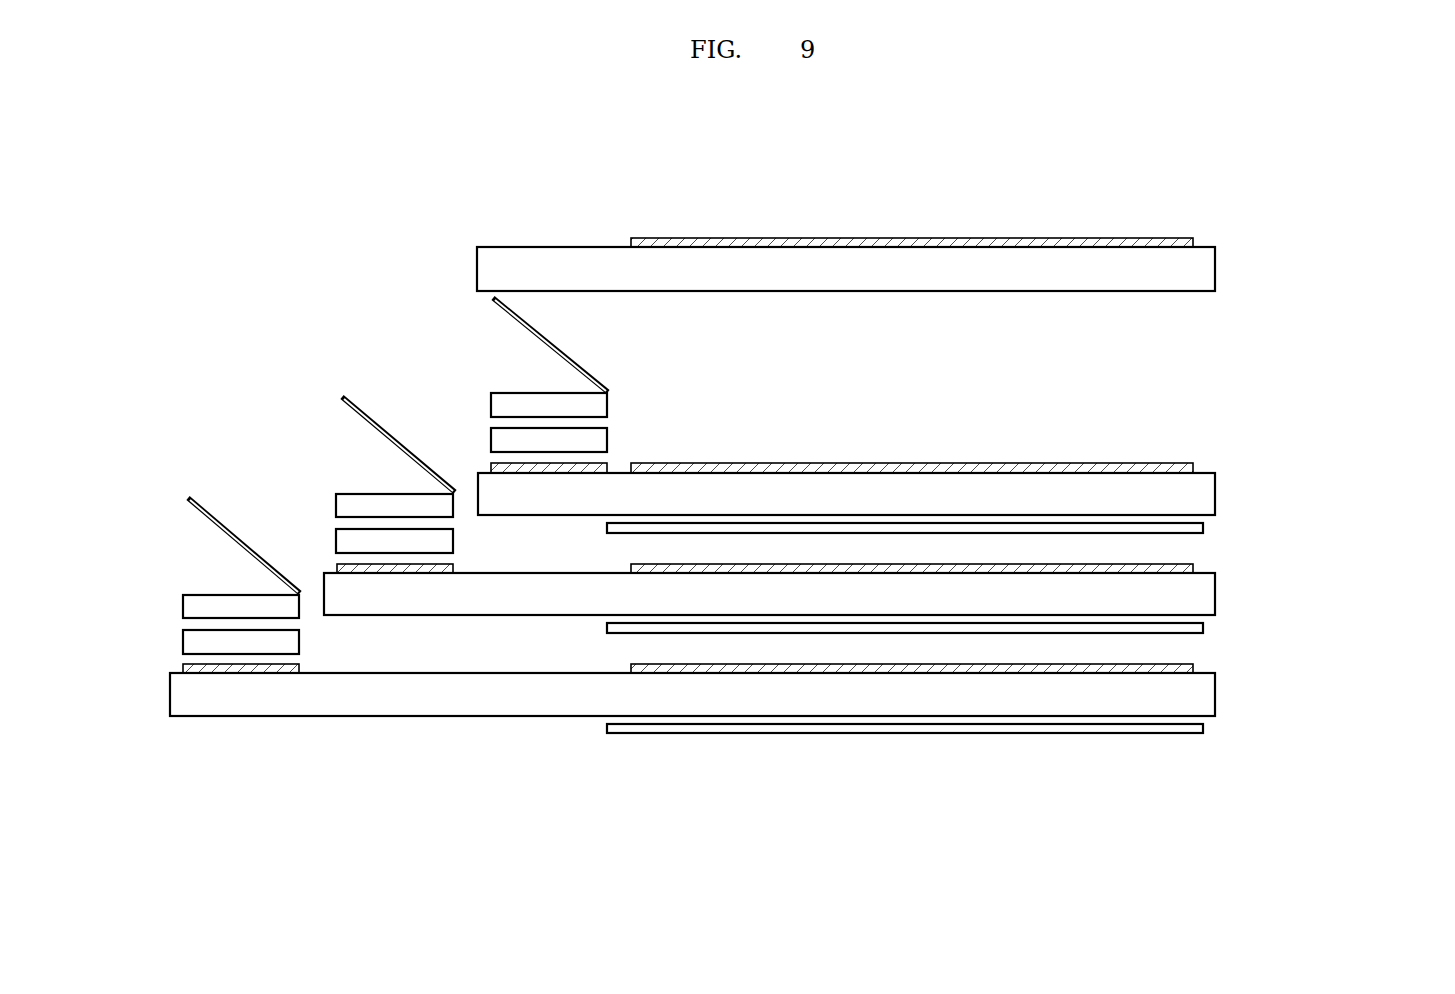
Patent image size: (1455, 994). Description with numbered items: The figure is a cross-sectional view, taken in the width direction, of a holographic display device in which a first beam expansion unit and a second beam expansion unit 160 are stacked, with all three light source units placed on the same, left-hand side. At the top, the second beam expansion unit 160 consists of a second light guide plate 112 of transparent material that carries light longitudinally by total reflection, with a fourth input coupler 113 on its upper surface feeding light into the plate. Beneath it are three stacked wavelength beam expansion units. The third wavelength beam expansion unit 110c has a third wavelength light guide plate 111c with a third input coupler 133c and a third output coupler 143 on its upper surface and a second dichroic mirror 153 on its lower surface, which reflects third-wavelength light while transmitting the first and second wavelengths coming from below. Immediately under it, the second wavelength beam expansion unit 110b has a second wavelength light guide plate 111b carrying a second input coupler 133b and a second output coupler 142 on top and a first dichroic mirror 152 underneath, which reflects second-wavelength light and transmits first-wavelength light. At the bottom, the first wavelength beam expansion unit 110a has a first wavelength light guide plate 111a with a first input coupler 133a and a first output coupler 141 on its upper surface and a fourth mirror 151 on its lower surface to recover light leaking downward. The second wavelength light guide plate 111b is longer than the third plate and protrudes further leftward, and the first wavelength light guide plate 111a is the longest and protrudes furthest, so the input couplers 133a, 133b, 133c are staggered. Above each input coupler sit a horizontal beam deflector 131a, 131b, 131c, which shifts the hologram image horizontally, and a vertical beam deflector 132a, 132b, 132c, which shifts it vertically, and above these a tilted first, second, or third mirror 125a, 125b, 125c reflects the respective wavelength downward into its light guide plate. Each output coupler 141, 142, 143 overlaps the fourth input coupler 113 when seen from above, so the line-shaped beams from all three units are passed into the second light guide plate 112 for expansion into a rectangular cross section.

The second beam expansion unit 160 is at (953, 256).
The second light guide plate 112 is at (1215, 268).
The fourth input coupler 113 is at (1193, 243).
The third wavelength beam expansion unit 110c is at (959, 496).
The third wavelength light guide plate 111c is at (1215, 490).
The third output coupler 143 is at (1193, 468).
The second dichroic mirror 153 is at (1203, 528).
The third input coupler 133c is at (607, 467).
The third vertical beam deflector 132c is at (491, 441).
The third horizontal beam deflector 131c is at (491, 404).
The third mirror 125c is at (546, 345).
The second wavelength beam expansion unit 110b is at (882, 596).
The second wavelength light guide plate 111b is at (1215, 591).
The second output coupler 142 is at (1193, 568).
The first dichroic mirror 152 is at (1203, 628).
The second input coupler 133b is at (453, 570).
The second vertical beam deflector 132b is at (336, 540).
The second horizontal beam deflector 131b is at (336, 505).
The second mirror 125b is at (395, 444).
The first wavelength beam expansion unit 110a is at (805, 696).
The first wavelength light guide plate 111a is at (1215, 692).
The first output coupler 141 is at (1193, 668).
The fourth mirror 151 is at (1203, 728).
The first input coupler 133a is at (299, 670).
The first vertical beam deflector 132a is at (183, 641).
The first horizontal beam deflector 131a is at (183, 606).
The first mirror 125a is at (243, 545).